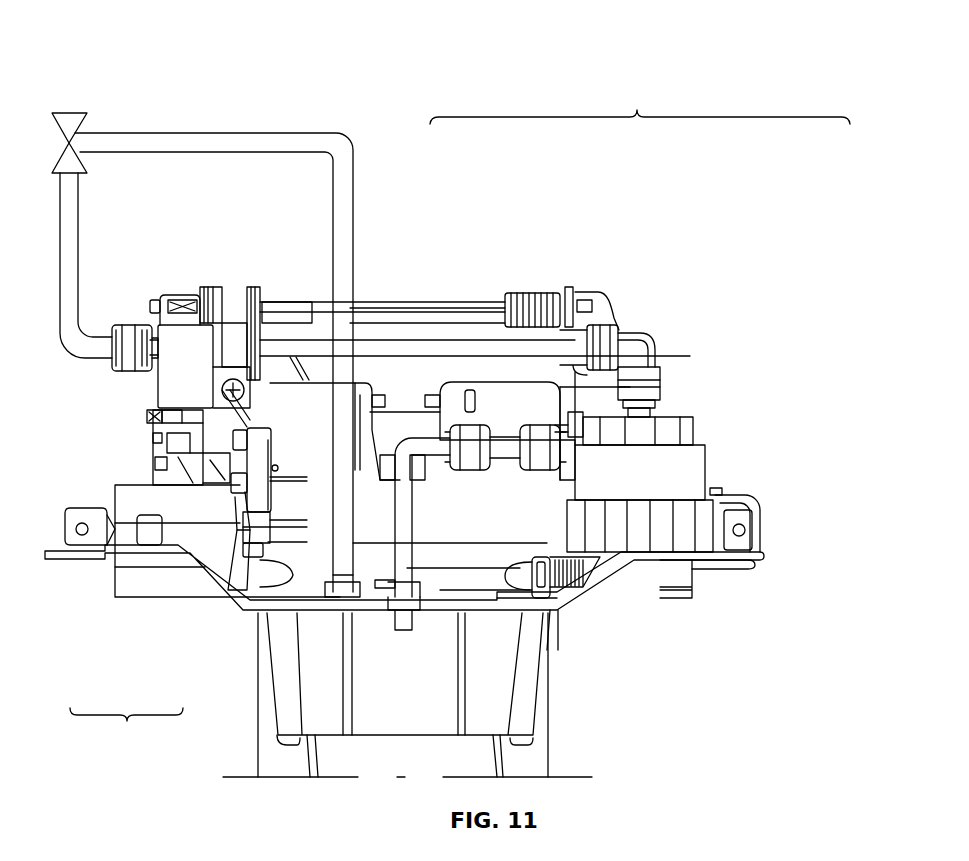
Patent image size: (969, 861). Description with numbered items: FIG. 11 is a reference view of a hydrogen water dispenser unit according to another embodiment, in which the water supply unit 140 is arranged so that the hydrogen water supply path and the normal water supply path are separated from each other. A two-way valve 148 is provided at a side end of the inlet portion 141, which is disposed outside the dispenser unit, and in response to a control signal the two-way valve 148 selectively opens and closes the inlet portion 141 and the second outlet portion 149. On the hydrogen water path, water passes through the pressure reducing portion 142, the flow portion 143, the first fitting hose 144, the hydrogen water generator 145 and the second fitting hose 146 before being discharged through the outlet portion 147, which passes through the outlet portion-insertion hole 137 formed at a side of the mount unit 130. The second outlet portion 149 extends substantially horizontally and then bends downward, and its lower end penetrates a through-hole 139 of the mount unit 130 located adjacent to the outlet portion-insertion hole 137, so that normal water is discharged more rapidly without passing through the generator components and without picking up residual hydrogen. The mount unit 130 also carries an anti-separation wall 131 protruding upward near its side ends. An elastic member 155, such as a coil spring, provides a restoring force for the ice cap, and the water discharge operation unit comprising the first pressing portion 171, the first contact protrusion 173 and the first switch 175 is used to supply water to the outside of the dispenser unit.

The mount unit 130 is at (126, 729).
The anti-separation wall 131 is at (103, 548).
The outlet portion-insertion hole 137 is at (385, 588).
The through-hole 139 is at (347, 590).
The water supply unit 140 is at (640, 103).
The inlet portion 141 is at (70, 262).
The pressure reducing portion 142 is at (188, 355).
The flow portion 143 is at (420, 350).
The first fitting hose 144 is at (638, 343).
The hydrogen water generator 145 is at (688, 473).
The second fitting hose 146 is at (560, 392).
The outlet portion 147 is at (680, 533).
The two-way valve 148 is at (72, 112).
The second outlet portion 149 is at (345, 186).
The elastic member 155 is at (532, 293).
The first pressing portion 171 is at (520, 680).
The first contact protrusion 173 is at (250, 565).
The first switch 175 is at (247, 445).